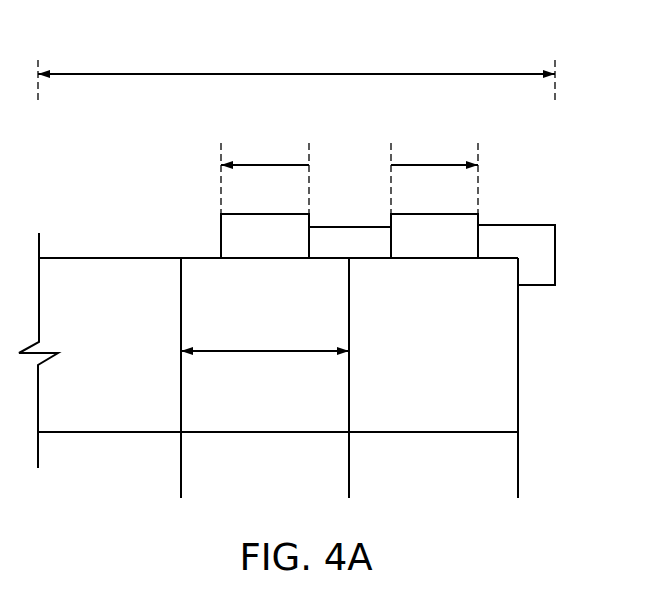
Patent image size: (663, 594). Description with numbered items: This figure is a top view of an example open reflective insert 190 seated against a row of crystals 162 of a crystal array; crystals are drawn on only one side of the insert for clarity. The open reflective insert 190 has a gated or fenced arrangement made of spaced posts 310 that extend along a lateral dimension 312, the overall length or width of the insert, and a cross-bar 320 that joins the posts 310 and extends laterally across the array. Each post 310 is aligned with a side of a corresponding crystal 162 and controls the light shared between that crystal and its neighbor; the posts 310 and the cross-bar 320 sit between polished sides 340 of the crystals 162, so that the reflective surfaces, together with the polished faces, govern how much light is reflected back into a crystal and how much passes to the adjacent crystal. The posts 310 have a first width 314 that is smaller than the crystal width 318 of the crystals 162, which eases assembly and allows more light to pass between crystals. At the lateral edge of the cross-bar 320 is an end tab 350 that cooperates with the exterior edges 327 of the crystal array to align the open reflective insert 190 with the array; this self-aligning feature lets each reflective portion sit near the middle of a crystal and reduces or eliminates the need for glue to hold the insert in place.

The lateral dimension 312 is at (295, 72).
The first width 314 is at (262, 163).
The posts 310 is at (248, 213).
The cross-bar 320 is at (348, 225).
The polished sides 340 is at (203, 255).
The open reflective insert 190 is at (542, 225).
The end tabs 350 is at (558, 255).
The crystal width 318 is at (264, 349).
The crystal 162 is at (503, 338).
The exterior edges 327 is at (521, 394).